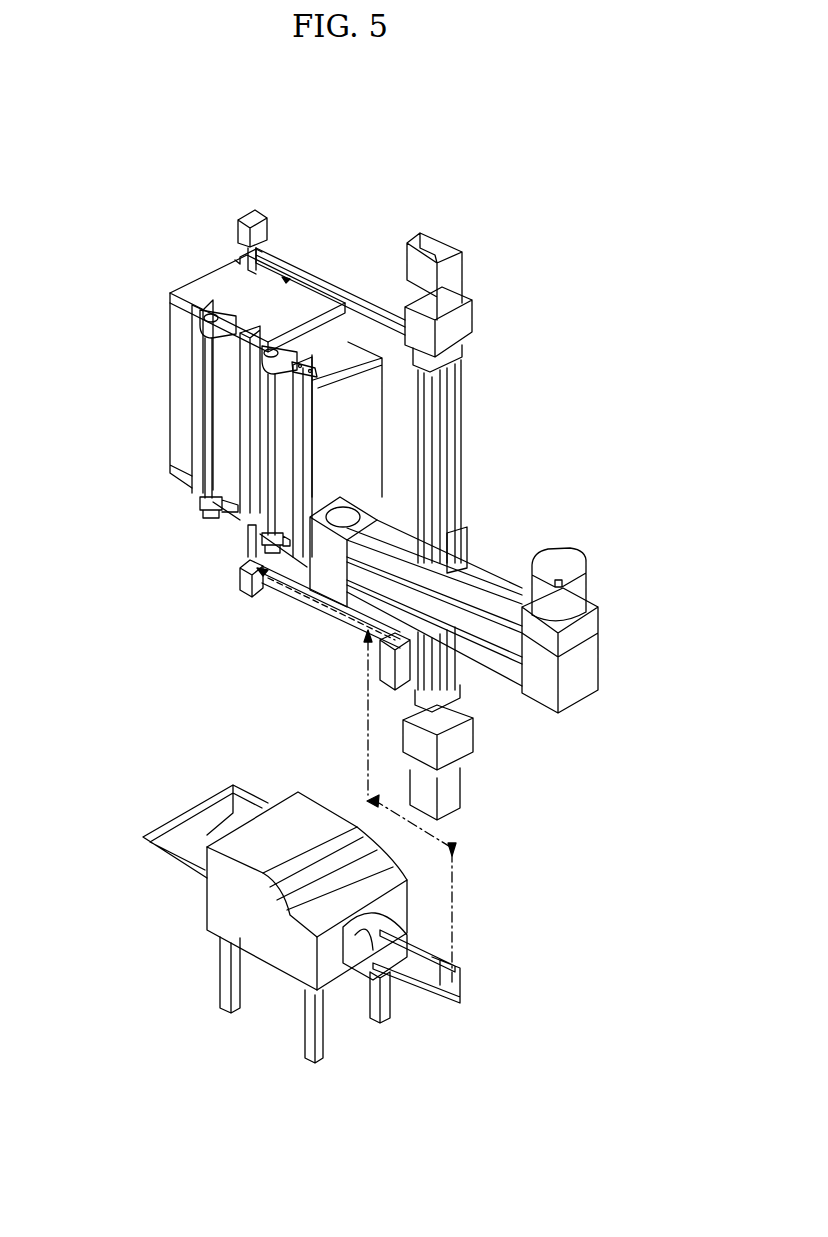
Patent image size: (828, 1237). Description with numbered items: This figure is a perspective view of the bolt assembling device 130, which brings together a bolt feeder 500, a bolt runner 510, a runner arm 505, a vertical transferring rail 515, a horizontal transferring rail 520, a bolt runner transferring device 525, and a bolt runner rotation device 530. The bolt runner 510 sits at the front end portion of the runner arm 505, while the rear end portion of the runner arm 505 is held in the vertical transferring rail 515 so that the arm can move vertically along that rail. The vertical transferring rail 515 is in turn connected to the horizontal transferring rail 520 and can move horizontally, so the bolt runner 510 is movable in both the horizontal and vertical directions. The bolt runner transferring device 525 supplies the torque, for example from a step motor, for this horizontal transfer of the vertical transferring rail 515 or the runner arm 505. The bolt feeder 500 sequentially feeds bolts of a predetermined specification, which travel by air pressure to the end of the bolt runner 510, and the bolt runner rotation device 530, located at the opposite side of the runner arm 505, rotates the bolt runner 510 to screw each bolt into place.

The bolt assembling device 130 is at (160, 722).
The bolt feeder 500 is at (237, 910).
The runner arm 505 is at (305, 268).
The bolt runner 510 is at (247, 260).
The vertical transferring rail 515 is at (448, 675).
The horizontal transferring rail 520 is at (482, 643).
The bolt runner transferring device 525 is at (573, 593).
The bolt runner rotation device 530 is at (250, 216).